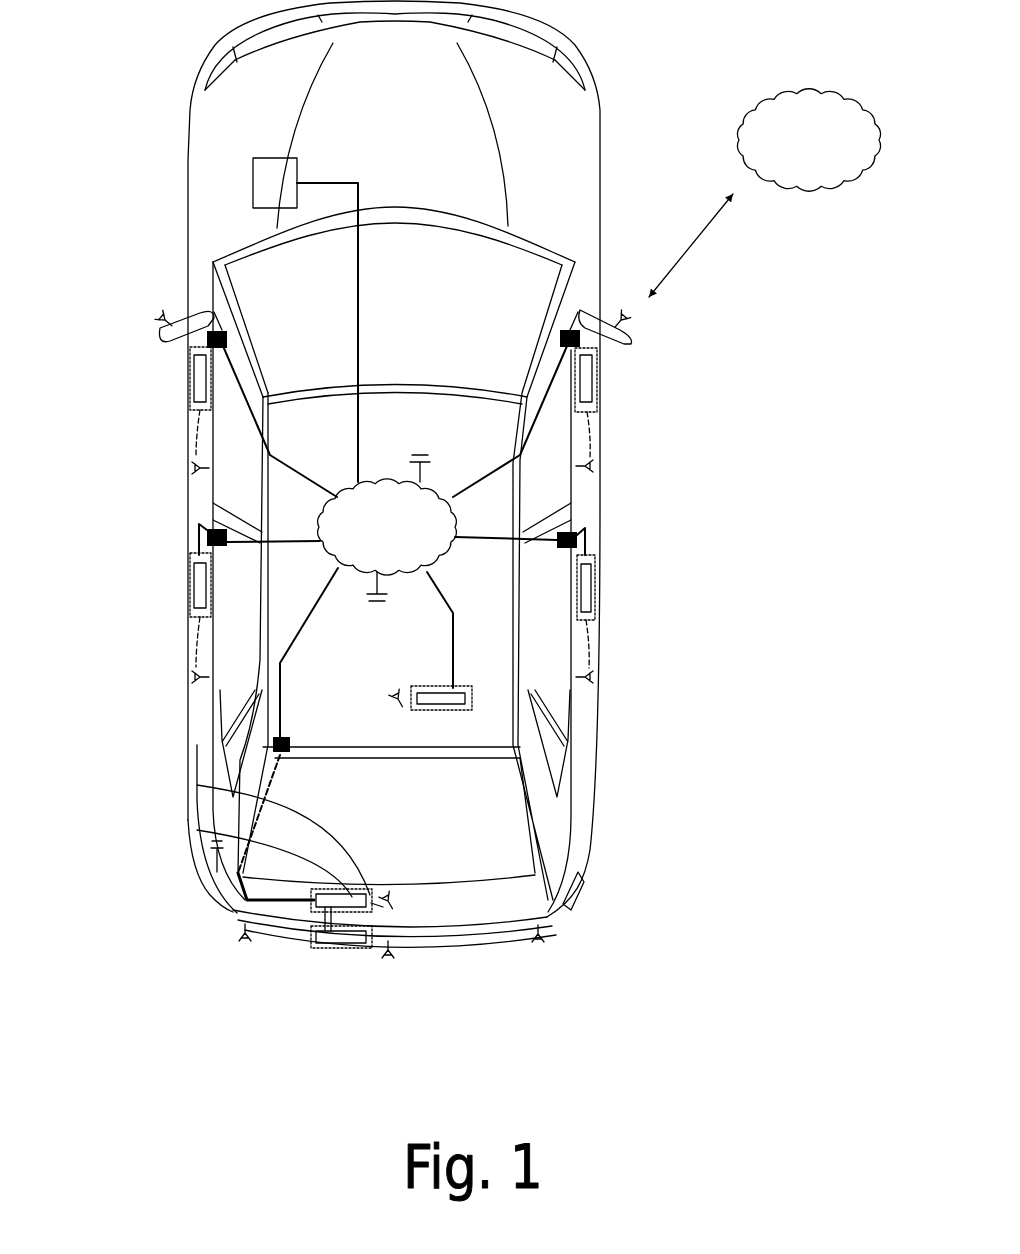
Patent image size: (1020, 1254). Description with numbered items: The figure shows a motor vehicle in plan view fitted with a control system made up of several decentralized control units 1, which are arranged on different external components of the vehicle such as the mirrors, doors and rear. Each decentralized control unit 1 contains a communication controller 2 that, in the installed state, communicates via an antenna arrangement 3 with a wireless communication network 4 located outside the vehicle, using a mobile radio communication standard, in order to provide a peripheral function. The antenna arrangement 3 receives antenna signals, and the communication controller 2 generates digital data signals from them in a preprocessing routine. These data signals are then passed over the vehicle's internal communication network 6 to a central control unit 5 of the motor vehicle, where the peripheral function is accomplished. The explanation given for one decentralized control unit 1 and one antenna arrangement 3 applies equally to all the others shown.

The decentralized control unit 1 is at (193, 408).
The communication controller 2 is at (188, 371).
The antenna arrangement 3 is at (152, 302).
The wireless communication network 4 is at (800, 154).
The central control unit 5 is at (255, 158).
The communication network 6 is at (377, 541).